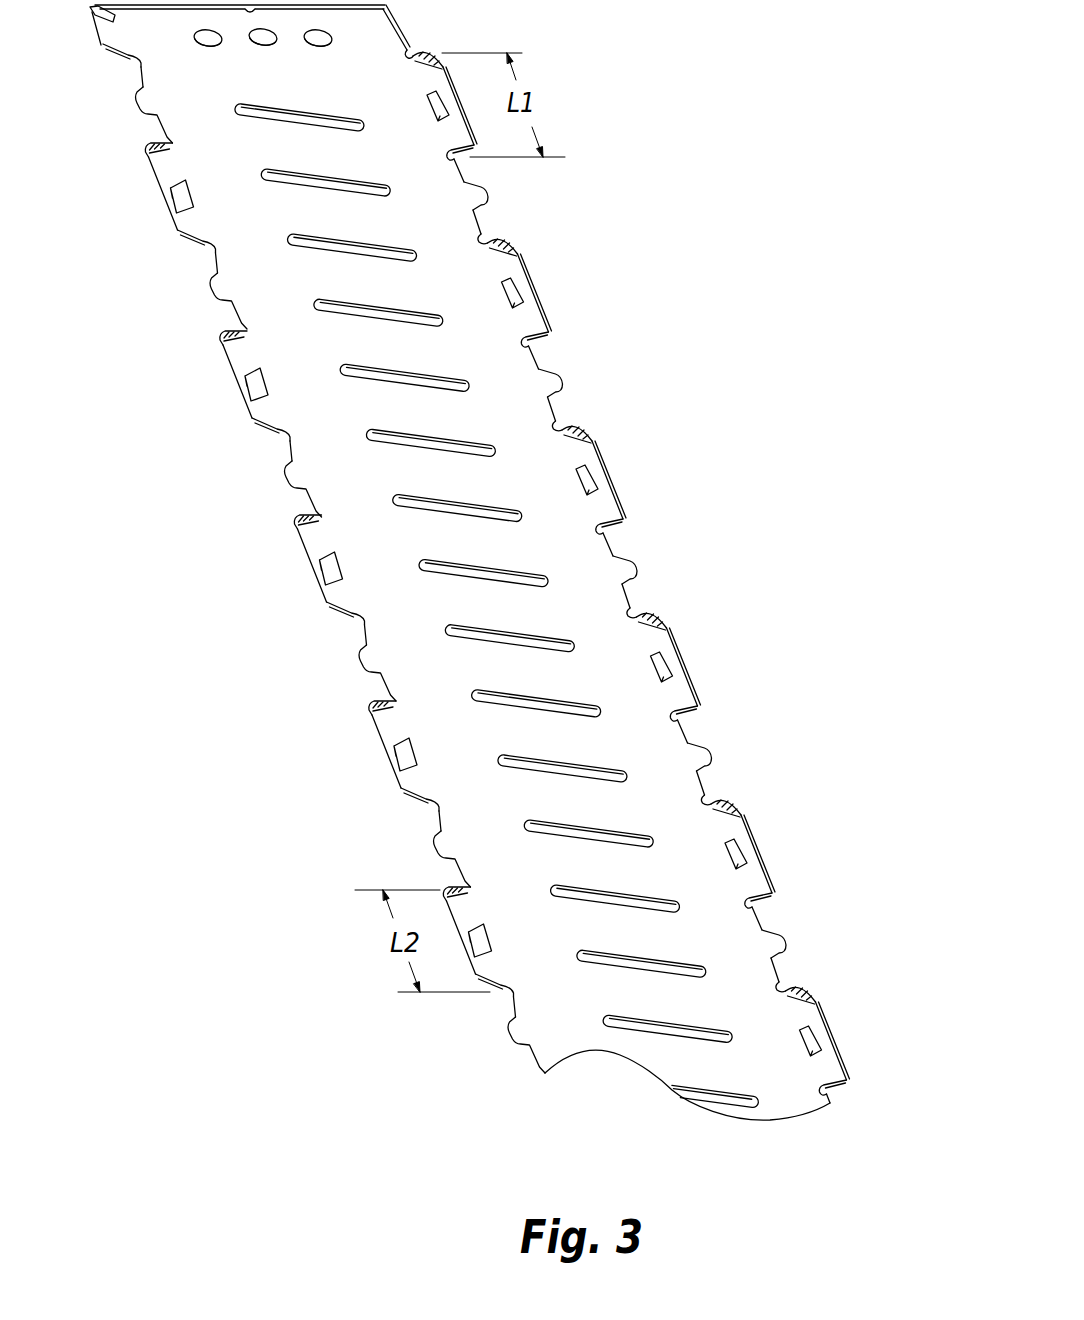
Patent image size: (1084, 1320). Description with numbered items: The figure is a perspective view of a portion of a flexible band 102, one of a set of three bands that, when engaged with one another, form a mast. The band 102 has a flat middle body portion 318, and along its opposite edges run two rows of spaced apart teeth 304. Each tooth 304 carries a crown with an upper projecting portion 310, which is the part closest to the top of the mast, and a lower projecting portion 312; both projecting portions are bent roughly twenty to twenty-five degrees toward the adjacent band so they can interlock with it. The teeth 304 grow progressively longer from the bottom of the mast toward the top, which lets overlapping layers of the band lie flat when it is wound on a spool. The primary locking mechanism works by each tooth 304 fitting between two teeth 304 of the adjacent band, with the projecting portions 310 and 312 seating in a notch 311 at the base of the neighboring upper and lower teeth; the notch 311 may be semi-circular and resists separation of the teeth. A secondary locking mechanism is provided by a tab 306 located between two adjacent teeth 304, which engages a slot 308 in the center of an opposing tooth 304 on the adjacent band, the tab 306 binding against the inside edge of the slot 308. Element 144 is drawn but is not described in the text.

The flexible band 102 is at (668, 107).
The slot 144 is at (480, 562).
The teeth 304 is at (565, 270).
The tab 306 is at (566, 400).
The slot 308 is at (318, 568).
The upper projecting portion 310 is at (508, 232).
The notch 311 is at (140, 62).
The lower projecting portion 312 is at (550, 338).
The flat middle body portion 318 is at (592, 742).